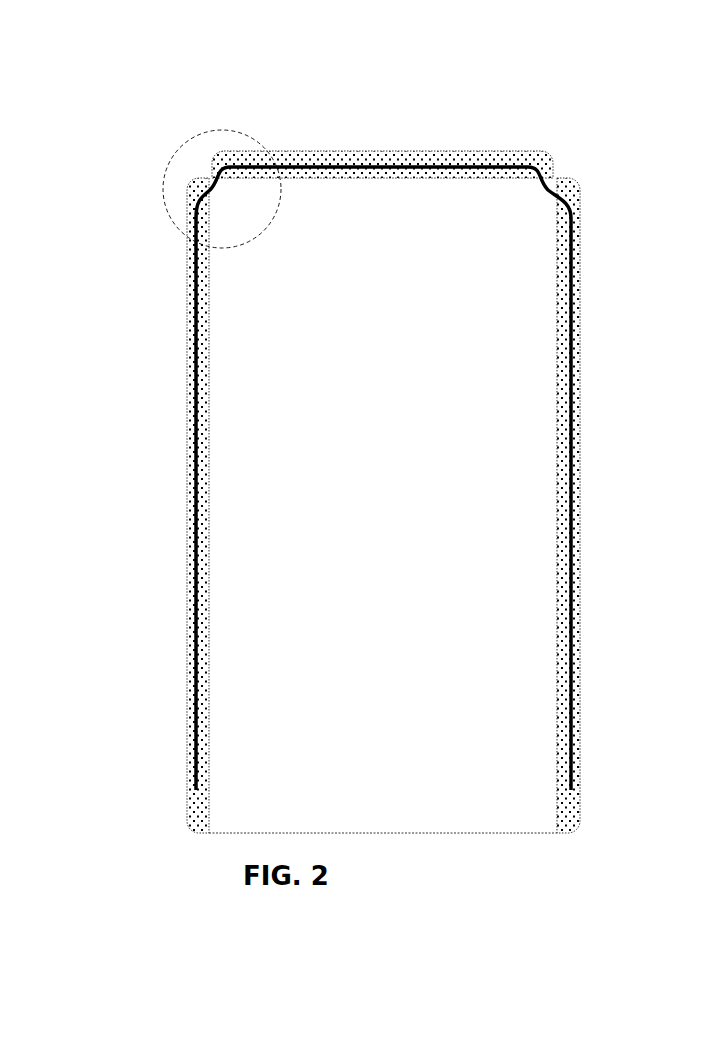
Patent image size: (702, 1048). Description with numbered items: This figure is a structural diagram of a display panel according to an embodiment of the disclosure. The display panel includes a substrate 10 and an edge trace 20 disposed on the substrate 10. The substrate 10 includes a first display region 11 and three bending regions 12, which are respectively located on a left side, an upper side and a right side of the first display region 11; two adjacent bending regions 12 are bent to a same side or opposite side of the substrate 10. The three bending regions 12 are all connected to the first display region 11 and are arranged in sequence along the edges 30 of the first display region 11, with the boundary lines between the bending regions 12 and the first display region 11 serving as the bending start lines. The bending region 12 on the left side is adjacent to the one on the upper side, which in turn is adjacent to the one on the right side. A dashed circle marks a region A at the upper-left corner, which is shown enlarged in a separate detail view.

The substrate 10 is at (304, 500).
The first display region 11 is at (233, 737).
The bending region 12 is at (92, 725).
The edge trace 20 is at (188, 522).
The edge of first display region 30 is at (413, 168).
The region A is at (224, 130).